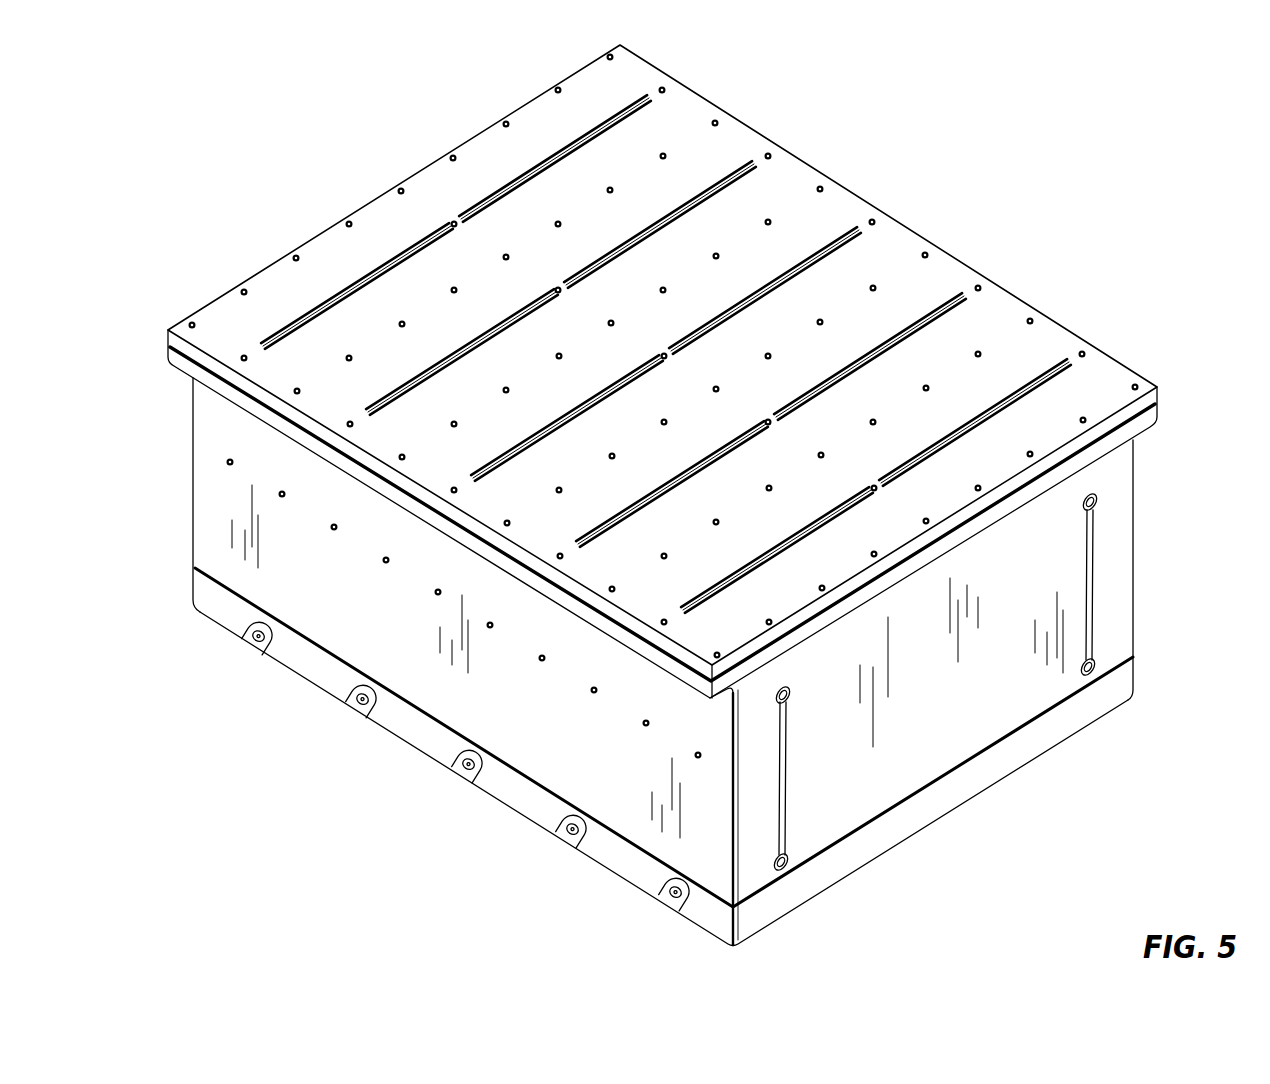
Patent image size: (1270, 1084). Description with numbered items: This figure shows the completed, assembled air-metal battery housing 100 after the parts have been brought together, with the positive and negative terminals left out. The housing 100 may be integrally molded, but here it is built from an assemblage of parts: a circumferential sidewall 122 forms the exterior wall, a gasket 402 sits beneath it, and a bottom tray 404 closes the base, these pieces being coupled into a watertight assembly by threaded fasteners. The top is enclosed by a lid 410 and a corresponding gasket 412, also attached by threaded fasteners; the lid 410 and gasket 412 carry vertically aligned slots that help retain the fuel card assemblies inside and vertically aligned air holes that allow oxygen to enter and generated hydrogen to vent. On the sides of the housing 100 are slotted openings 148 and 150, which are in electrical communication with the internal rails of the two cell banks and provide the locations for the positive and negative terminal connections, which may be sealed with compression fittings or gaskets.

The housing 100 is at (831, 76).
The circumferential sidewall 122 is at (446, 608).
The slotted opening 148 is at (787, 777).
The slotted opening 150 is at (1085, 597).
The gasket 402 is at (1138, 646).
The bottom tray 404 is at (1097, 708).
The lid 410 is at (1158, 388).
The gasket 412 is at (666, 354).